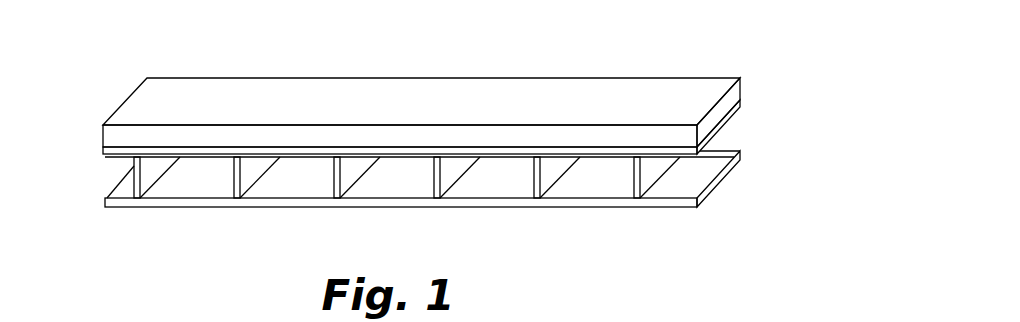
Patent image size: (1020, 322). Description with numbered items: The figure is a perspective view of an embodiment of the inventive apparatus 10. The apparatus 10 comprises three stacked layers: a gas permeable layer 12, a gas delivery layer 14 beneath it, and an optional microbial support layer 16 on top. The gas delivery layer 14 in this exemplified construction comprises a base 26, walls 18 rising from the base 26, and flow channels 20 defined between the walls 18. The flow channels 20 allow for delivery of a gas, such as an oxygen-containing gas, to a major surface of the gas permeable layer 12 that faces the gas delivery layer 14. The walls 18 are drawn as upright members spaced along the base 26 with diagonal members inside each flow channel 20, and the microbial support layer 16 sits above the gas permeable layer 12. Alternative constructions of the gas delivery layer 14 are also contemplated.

The apparatus 10 is at (616, 54).
The gas permeable layer 12 is at (105, 154).
The gas delivery layer 14 is at (394, 206).
The microbial support layer 16 is at (107, 140).
The walls 18 is at (240, 201).
The flow channels 20 is at (456, 191).
The base 26 is at (565, 202).